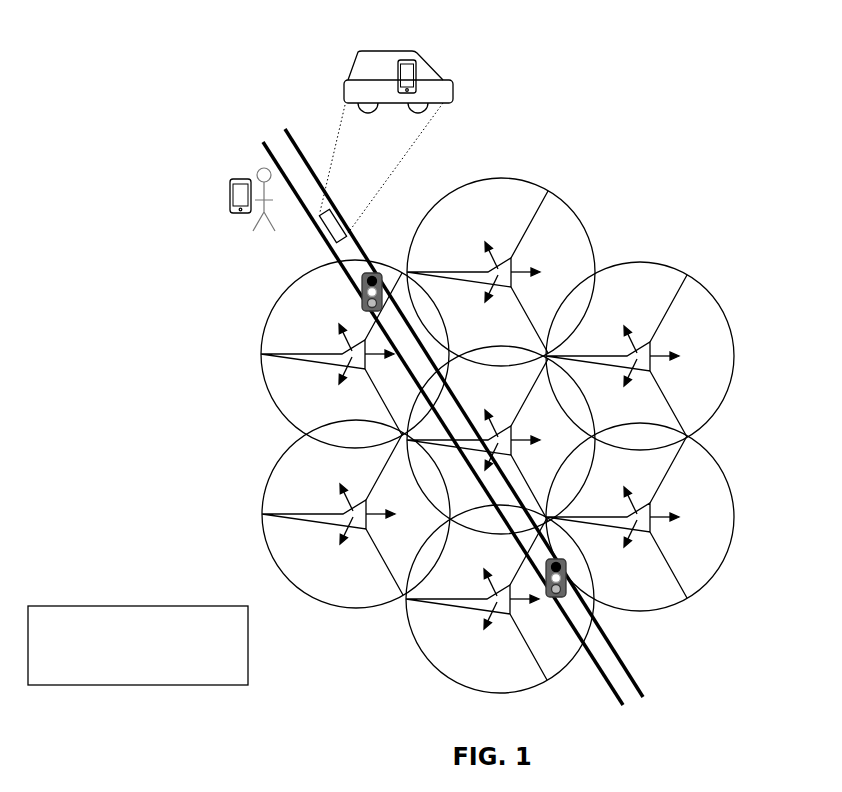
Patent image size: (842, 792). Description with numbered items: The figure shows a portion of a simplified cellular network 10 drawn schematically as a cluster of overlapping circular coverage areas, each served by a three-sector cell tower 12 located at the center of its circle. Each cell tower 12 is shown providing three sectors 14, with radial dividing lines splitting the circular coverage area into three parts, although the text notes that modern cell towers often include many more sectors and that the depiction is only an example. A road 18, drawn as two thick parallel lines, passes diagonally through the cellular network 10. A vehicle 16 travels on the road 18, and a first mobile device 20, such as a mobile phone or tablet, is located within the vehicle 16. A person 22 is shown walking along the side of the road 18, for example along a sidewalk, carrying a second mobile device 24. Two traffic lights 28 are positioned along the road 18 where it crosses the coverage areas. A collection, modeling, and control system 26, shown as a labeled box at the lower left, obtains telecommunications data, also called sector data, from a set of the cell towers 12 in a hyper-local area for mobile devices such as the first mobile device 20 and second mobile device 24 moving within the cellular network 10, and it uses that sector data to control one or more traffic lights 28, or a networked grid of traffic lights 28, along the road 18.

The cellular network 10 is at (640, 176).
The cell tower 12 is at (498, 276).
The sector 14 is at (460, 226).
The vehicle 16 is at (453, 101).
The road 18 is at (633, 679).
The first mobile device 20 is at (418, 62).
The person 22 is at (250, 250).
The second mobile device 24 is at (229, 189).
The collection, modeling, and control system 26 is at (129, 685).
The traffic light 28 is at (357, 290).